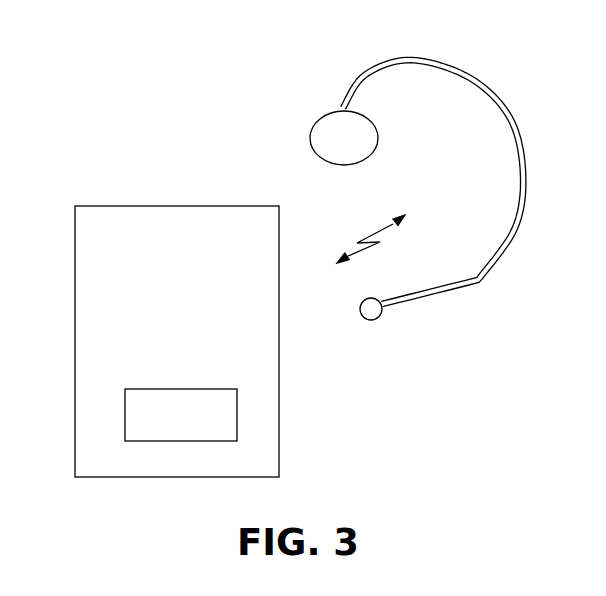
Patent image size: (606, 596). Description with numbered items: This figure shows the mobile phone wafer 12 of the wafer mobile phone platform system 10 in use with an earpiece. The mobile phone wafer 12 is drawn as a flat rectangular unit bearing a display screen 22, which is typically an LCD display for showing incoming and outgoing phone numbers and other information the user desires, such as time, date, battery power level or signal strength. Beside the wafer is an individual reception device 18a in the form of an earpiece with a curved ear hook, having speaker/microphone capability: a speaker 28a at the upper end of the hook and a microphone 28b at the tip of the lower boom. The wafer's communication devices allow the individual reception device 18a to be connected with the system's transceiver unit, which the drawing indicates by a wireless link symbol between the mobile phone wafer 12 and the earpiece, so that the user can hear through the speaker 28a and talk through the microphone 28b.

The wafer mobile phone platform system 10 is at (111, 141).
The mobile phone wafer 12 is at (100, 276).
The display screen 22 is at (222, 417).
The individual reception device 18a is at (455, 58).
The speaker 28a is at (333, 132).
The microphone 28b is at (425, 298).